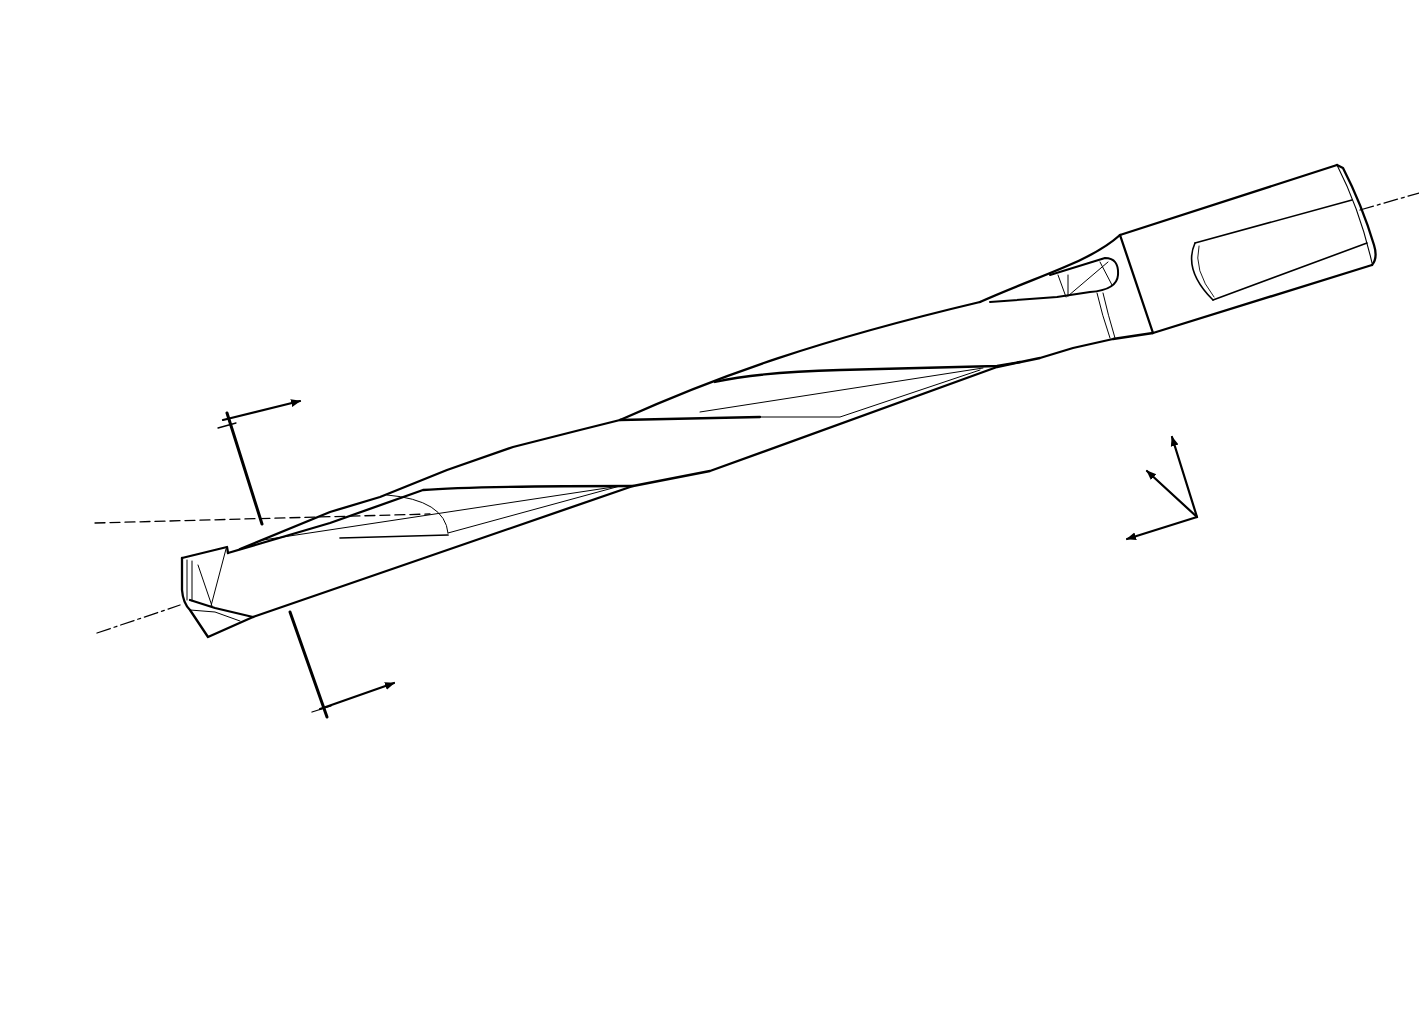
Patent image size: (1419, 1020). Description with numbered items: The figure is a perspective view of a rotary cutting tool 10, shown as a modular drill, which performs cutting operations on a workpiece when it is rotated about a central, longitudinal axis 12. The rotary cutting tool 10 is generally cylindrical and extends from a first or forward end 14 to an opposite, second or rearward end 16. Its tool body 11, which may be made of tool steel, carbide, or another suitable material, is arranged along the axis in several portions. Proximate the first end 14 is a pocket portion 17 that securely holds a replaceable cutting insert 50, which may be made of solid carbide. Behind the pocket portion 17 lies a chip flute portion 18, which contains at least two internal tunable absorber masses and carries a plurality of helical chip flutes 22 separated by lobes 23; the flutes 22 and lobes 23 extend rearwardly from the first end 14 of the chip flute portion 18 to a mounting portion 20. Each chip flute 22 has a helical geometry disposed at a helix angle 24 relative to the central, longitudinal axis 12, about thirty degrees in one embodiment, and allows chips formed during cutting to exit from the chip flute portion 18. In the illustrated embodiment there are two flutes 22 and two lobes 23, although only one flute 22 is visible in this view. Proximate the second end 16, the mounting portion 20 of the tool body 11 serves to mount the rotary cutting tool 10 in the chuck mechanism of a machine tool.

The rotary cutting tool 10 is at (575, 201).
The tool body 11 is at (667, 360).
The central, longitudinal axis 12 is at (130, 623).
The first end 14 is at (170, 580).
The second end 16 is at (1371, 196).
The pocket portion 17 is at (237, 636).
The chip flute portion 18 is at (605, 396).
The mounting portion 20 is at (1195, 188).
The chip flute 22 is at (858, 394).
The lobe 23 is at (505, 467).
The helix angle 24 is at (107, 528).
The replaceable cutting insert 50 is at (228, 644).